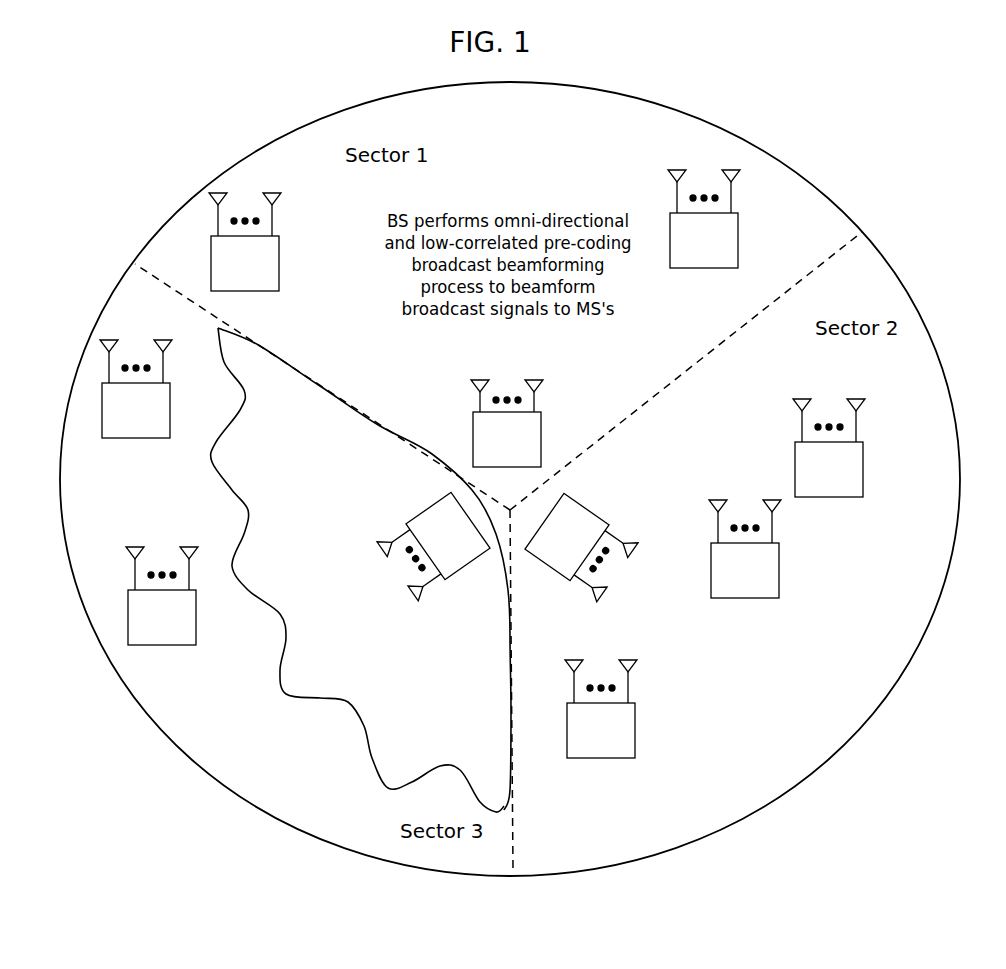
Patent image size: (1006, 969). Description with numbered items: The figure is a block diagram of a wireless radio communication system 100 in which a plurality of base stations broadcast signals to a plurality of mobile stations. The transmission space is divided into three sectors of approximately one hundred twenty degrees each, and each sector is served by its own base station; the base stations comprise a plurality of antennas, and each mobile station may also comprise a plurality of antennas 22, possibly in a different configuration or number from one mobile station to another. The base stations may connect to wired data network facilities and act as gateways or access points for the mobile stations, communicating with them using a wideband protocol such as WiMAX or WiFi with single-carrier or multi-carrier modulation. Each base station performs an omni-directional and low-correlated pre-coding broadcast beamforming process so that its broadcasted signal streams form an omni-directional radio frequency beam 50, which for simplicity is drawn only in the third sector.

The wireless radio communication system 100 is at (114, 152).
The antennas 22 is at (482, 422).
The omni-directional radio frequency beam 50 is at (344, 706).